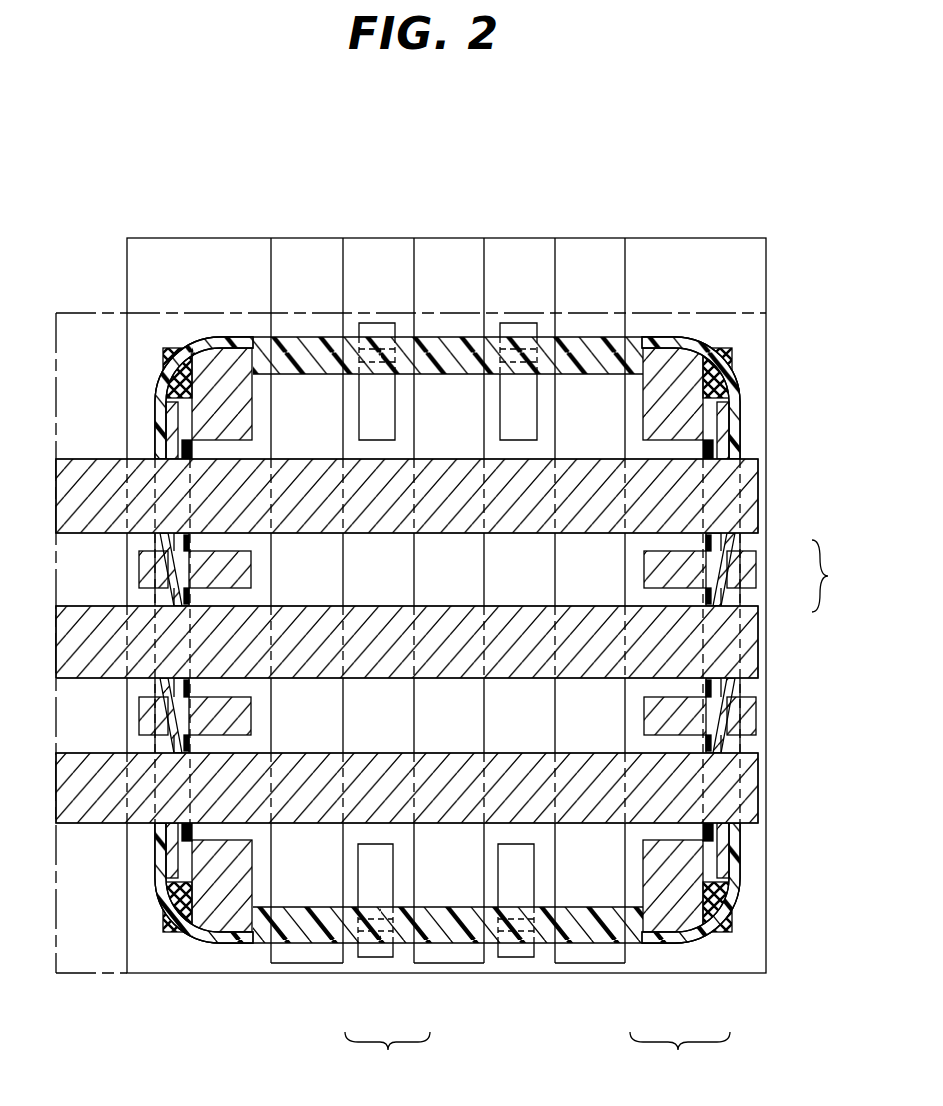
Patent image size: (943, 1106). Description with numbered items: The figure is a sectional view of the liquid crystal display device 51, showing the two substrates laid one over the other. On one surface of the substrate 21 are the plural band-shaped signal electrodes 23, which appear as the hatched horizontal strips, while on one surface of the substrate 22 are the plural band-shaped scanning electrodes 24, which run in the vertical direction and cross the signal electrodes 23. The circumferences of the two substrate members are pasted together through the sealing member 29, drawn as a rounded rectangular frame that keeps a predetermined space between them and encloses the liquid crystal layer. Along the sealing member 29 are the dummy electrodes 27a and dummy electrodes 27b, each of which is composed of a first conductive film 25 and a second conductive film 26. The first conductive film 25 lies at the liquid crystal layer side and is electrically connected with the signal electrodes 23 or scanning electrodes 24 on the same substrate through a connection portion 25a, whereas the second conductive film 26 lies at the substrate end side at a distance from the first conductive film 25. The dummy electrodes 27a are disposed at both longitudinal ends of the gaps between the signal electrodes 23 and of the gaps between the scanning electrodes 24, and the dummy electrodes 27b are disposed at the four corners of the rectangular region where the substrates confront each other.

The substrate 21 is at (78, 318).
The substrate 22 is at (738, 238).
The signal electrodes 23 is at (60, 778).
The scanning electrodes 24 is at (570, 238).
The first conductive film 25 is at (247, 402).
The connection portion 25a is at (170, 450).
The second conductive film 26 is at (172, 348).
The dummy electrodes 27a is at (607, 810).
The dummy electrodes 27b is at (680, 1056).
The sealing member 29 is at (291, 337).
The liquid crystal display device 51 is at (629, 151).